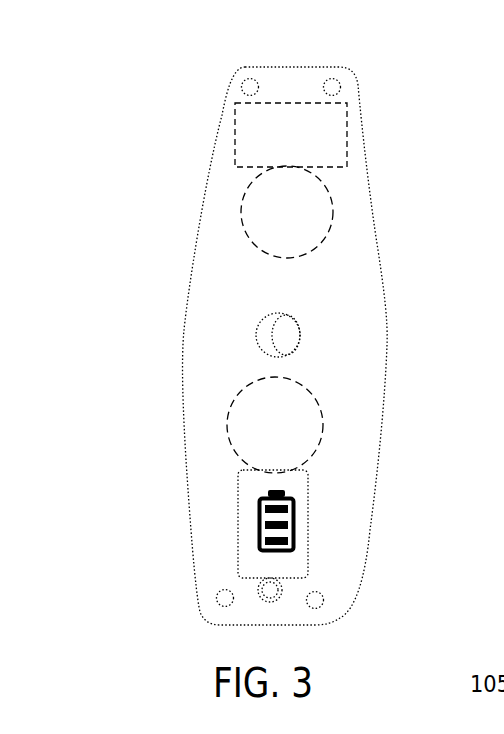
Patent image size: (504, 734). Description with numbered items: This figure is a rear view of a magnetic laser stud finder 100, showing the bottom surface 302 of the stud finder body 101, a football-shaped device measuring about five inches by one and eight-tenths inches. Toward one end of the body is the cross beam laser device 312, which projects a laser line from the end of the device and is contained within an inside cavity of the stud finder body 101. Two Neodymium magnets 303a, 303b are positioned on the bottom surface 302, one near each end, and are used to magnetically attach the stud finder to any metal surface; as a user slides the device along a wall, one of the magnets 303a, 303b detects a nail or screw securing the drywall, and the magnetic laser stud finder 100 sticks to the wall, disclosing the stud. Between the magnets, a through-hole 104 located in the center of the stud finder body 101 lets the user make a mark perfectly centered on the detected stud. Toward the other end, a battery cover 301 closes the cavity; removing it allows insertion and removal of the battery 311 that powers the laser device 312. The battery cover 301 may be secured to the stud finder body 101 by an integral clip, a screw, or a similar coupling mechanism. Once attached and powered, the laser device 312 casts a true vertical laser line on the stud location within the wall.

The magnetic laser stud finder 100 is at (271, 347).
The stud finder body 101 is at (271, 346).
The through-hole 104 is at (373, 305).
The battery cover 301 is at (203, 556).
The bottom surface 302 is at (227, 346).
The magnet 303a is at (222, 197).
The magnet 303b is at (190, 451).
The battery 311 is at (371, 511).
The cross beam laser device 312 is at (351, 133).